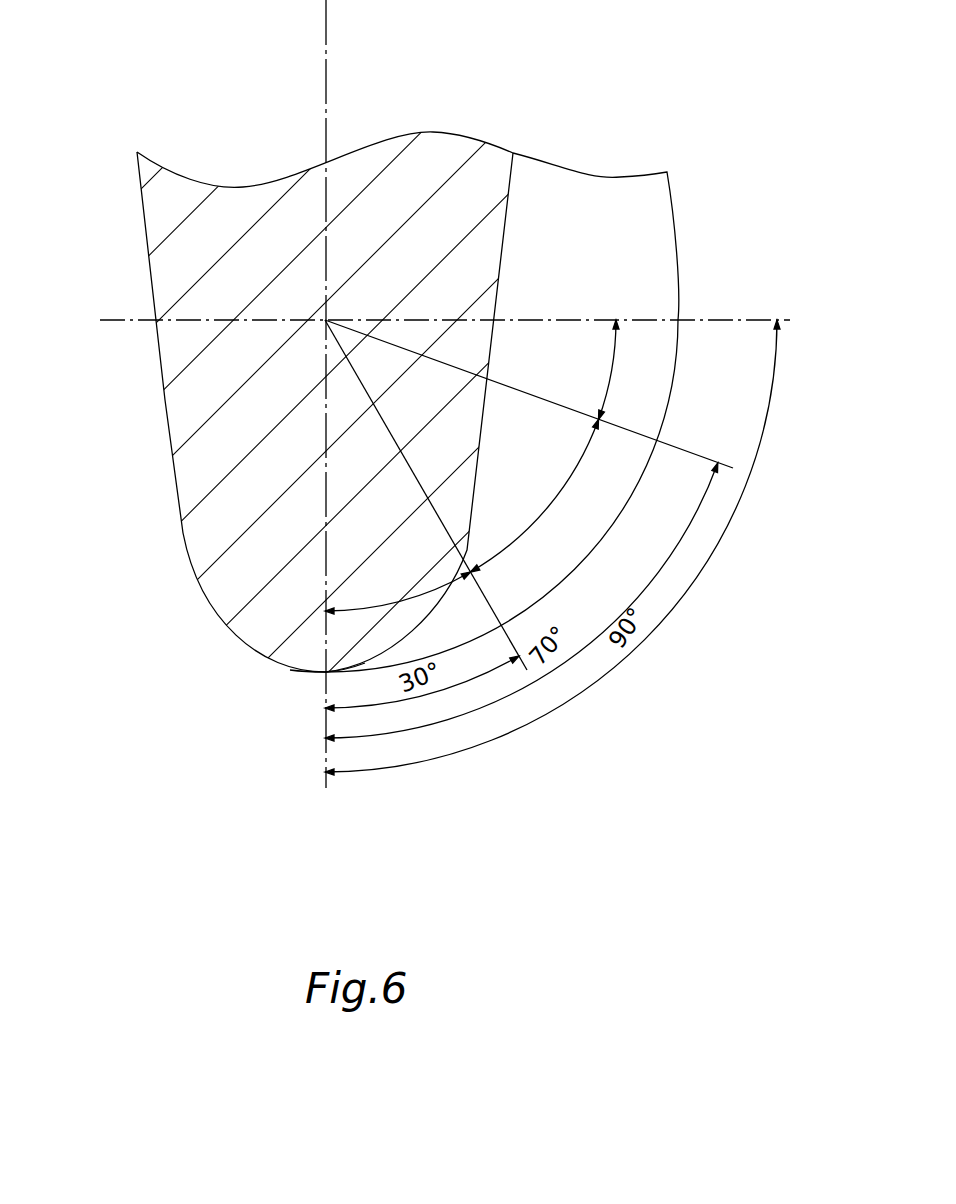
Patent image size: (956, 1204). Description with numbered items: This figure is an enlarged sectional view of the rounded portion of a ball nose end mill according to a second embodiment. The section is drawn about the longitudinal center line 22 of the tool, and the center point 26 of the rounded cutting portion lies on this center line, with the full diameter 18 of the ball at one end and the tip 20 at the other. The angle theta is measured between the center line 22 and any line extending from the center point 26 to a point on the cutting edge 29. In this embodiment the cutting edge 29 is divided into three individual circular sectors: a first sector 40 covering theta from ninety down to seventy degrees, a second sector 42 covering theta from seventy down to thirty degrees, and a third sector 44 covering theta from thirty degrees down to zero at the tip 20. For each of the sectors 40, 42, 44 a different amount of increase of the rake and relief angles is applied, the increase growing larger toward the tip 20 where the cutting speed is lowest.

The full diameter 18 is at (680, 322).
The tip 20 is at (327, 672).
The longitudinal center line 22 is at (323, 112).
The center point 26 is at (327, 317).
The cutting edge 29 is at (573, 572).
The first sector 40 is at (613, 364).
The second sector 42 is at (552, 500).
The third sector 44 is at (413, 597).